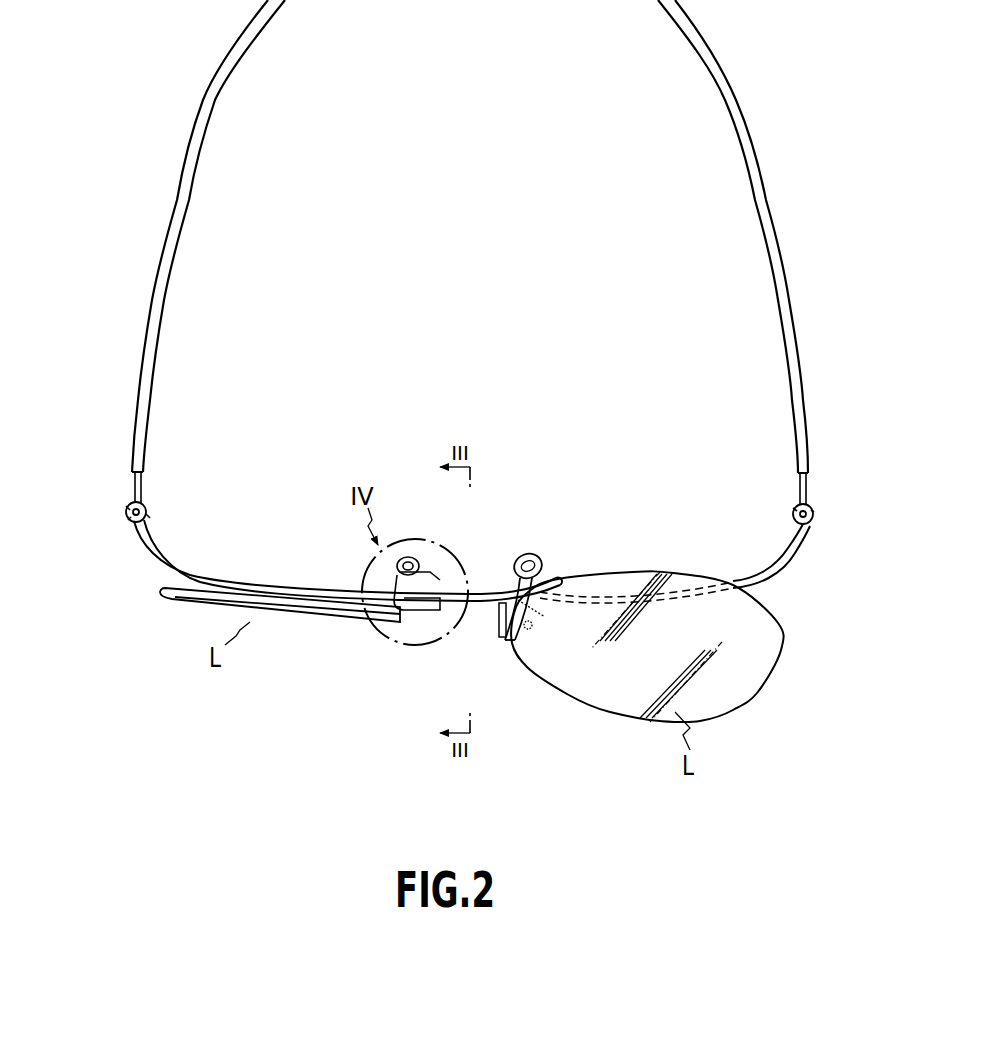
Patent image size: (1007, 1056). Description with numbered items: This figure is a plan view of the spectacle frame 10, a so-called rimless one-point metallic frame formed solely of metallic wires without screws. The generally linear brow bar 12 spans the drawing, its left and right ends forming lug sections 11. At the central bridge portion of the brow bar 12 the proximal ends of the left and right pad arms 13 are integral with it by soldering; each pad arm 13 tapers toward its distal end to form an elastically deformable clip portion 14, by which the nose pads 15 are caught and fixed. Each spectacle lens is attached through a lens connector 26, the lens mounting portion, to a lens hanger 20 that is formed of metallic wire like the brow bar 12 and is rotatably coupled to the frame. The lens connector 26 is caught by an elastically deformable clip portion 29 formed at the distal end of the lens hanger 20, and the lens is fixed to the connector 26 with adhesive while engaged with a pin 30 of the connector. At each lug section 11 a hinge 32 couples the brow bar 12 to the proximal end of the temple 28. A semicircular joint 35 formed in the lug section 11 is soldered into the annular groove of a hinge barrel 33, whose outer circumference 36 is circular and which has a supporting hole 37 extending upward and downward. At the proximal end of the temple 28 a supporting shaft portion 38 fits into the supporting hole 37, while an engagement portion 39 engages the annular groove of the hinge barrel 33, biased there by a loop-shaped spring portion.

The spectacle frame 10 is at (137, 705).
The lug section 11 is at (790, 540).
The brow bar 12 is at (232, 584).
The pad arm 13 is at (518, 560).
The clip portion 14 is at (545, 560).
The nose pad 15 is at (530, 553).
The lens hanger 20 is at (531, 604).
The lens connector 26 is at (500, 630).
The temple 28 is at (808, 478).
The clip portion 29 is at (507, 640).
The pin 30 is at (727, 83).
The hinge 32 is at (96, 515).
The hinge barrel 33 is at (815, 510).
The semicircular joint 35 is at (125, 505).
The outer circumference 36 is at (150, 520).
The supporting hole 37 is at (795, 506).
The supporting shaft portion 38 is at (128, 521).
The engagement portion 39 is at (150, 503).